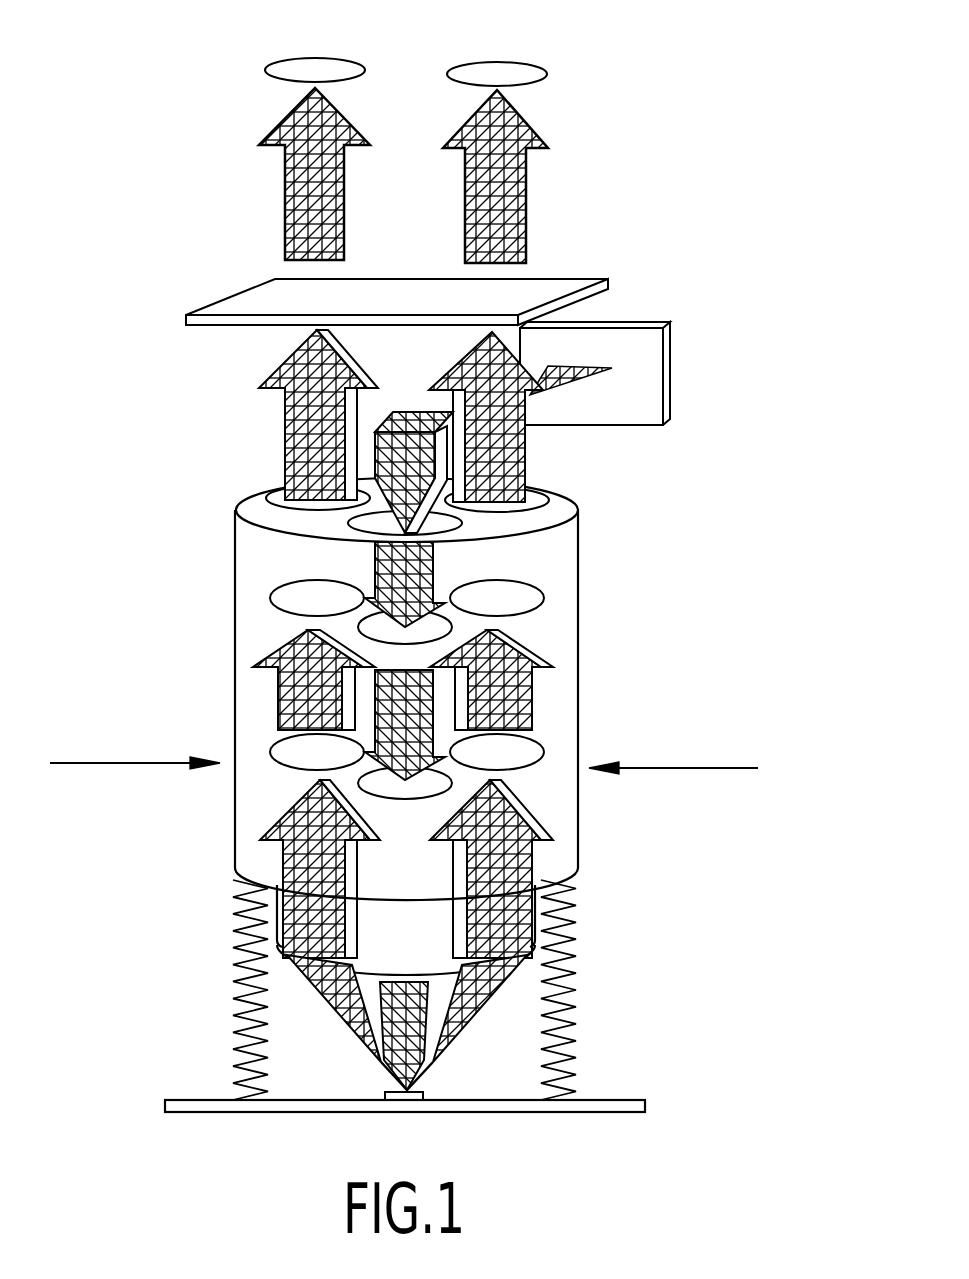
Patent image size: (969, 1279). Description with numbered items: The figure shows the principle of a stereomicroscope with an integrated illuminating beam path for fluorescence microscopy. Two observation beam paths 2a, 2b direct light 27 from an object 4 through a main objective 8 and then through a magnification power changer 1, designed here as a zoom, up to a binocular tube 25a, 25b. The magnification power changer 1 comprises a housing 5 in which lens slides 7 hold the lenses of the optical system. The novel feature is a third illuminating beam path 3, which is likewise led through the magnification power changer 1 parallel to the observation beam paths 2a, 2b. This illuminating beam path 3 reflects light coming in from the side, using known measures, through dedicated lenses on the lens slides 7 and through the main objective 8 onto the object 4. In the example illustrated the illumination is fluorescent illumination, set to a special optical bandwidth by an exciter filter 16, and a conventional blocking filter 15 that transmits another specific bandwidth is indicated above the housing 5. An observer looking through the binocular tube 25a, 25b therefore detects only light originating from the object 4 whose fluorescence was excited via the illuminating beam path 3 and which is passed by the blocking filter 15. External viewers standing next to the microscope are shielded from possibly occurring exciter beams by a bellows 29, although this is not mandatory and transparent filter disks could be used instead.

The magnification power changer 1 is at (125, 763).
The lens slides 7 is at (680, 768).
The observation beam path 2a is at (300, 202).
The observation beam path 2b is at (507, 213).
The binocular tube 25a is at (282, 68).
The binocular tube 25b is at (525, 72).
The illuminating beam path 3 is at (410, 440).
The housing 5 is at (235, 560).
The main objective 8 is at (417, 954).
The blocking filter 15 is at (253, 297).
The exciter filter 16 is at (648, 351).
The light 27 is at (462, 1008).
The object 4 is at (385, 1092).
The bellows 29 is at (250, 985).